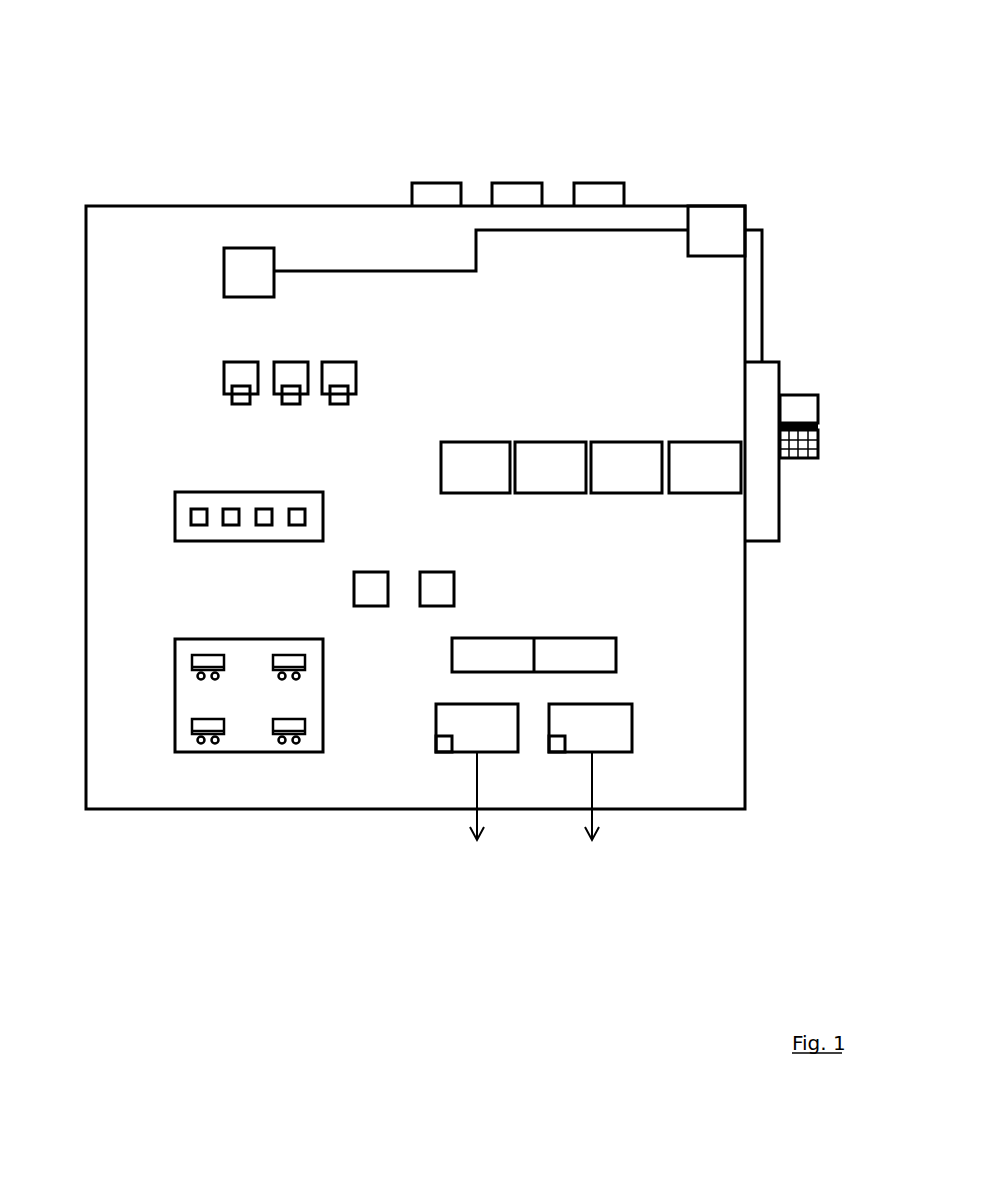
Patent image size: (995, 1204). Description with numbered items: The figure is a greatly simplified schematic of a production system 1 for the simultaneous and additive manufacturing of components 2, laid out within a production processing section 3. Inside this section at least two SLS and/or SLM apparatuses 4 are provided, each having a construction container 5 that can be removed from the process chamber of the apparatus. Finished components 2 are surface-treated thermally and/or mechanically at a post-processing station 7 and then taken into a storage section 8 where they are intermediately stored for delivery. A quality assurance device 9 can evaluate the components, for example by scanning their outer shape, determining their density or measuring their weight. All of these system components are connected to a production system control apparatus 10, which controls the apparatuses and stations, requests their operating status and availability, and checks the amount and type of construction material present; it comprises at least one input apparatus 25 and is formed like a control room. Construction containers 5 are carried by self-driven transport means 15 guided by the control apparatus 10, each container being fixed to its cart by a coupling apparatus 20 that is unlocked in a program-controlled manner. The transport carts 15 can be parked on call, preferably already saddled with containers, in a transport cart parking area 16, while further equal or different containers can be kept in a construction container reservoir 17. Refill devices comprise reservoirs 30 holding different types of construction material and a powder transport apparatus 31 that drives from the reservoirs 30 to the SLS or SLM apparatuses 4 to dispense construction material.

The production system 1 is at (692, 135).
The component 2 is at (234, 394).
The production processing section 3 is at (479, 355).
The SLS and/or SLM apparatus 4 is at (297, 365).
The construction container 5 is at (238, 512).
The post-processing station 7 is at (640, 442).
The storage section 8 is at (608, 745).
The quality assurance device 9 is at (610, 651).
The production system control apparatus 10 is at (765, 522).
The self-driven transport means 15 is at (210, 730).
The transport cart parking area 16 is at (181, 688).
The construction container reservoir 17 is at (174, 530).
The coupling apparatus 20 is at (799, 412).
The input apparatus 25 is at (820, 450).
The reservoir 30 is at (432, 190).
The powder transport apparatus 31 is at (247, 264).